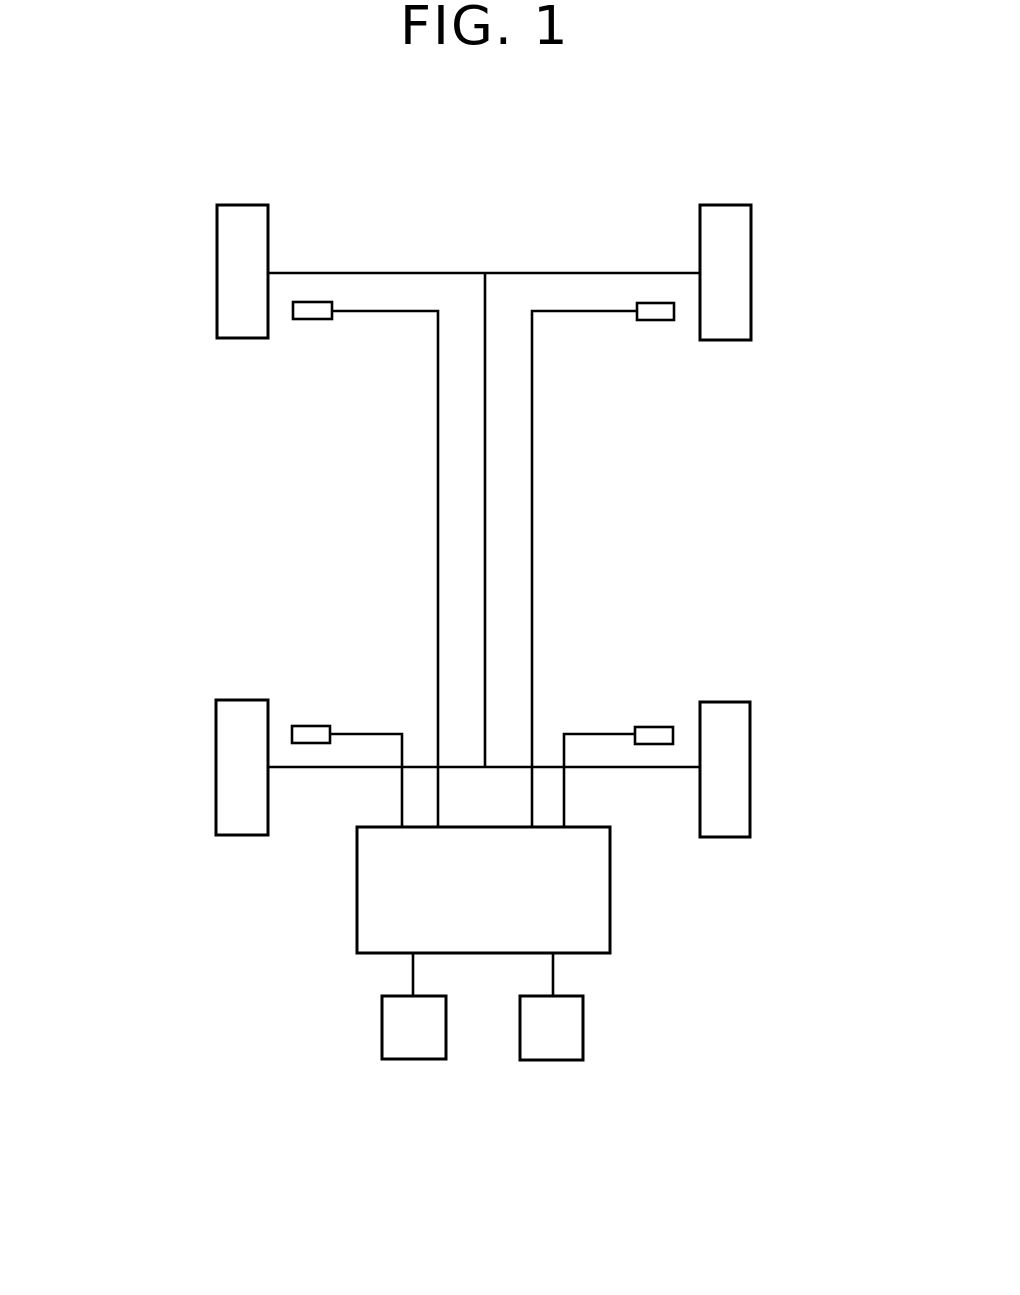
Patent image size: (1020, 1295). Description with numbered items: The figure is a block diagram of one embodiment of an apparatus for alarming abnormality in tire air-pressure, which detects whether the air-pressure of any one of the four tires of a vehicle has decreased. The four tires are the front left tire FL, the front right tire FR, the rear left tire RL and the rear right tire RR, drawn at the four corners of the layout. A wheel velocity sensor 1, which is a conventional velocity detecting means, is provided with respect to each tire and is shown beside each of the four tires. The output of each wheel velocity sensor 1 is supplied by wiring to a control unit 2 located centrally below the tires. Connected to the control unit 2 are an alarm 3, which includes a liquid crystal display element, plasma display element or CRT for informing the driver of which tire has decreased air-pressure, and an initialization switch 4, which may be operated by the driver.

The wheel velocity sensor 1 is at (303, 311).
The control unit 2 is at (597, 935).
The alarm 3 is at (413, 1036).
The initialization switch 4 is at (553, 1036).
The front left tire FL is at (231, 244).
The front right tire FR is at (735, 250).
The rear left tire RL is at (232, 750).
The rear right tire RR is at (735, 757).